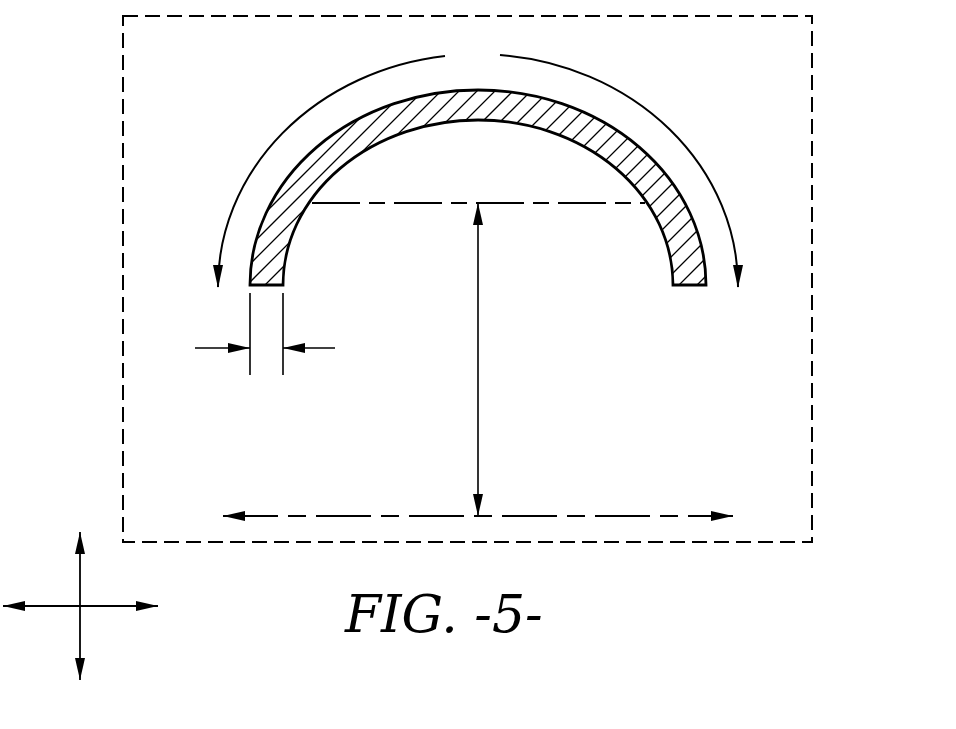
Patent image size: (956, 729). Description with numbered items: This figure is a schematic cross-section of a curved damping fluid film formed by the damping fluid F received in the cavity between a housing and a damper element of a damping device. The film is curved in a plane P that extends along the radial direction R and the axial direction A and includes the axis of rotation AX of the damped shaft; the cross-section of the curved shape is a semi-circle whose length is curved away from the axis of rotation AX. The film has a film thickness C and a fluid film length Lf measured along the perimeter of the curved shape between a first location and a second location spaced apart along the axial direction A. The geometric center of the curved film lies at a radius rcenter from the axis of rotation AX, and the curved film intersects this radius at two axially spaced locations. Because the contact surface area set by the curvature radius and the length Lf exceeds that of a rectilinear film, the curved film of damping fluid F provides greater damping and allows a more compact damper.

The damping fluid F is at (630, 157).
The plane P is at (812, 335).
The axis of rotation AX is at (636, 516).
The film thickness C is at (250, 334).
The fluid film length Lf is at (478, 165).
The radius to geometric center rcenter is at (478, 359).
The radial direction R is at (80, 587).
The axial direction A is at (95, 607).